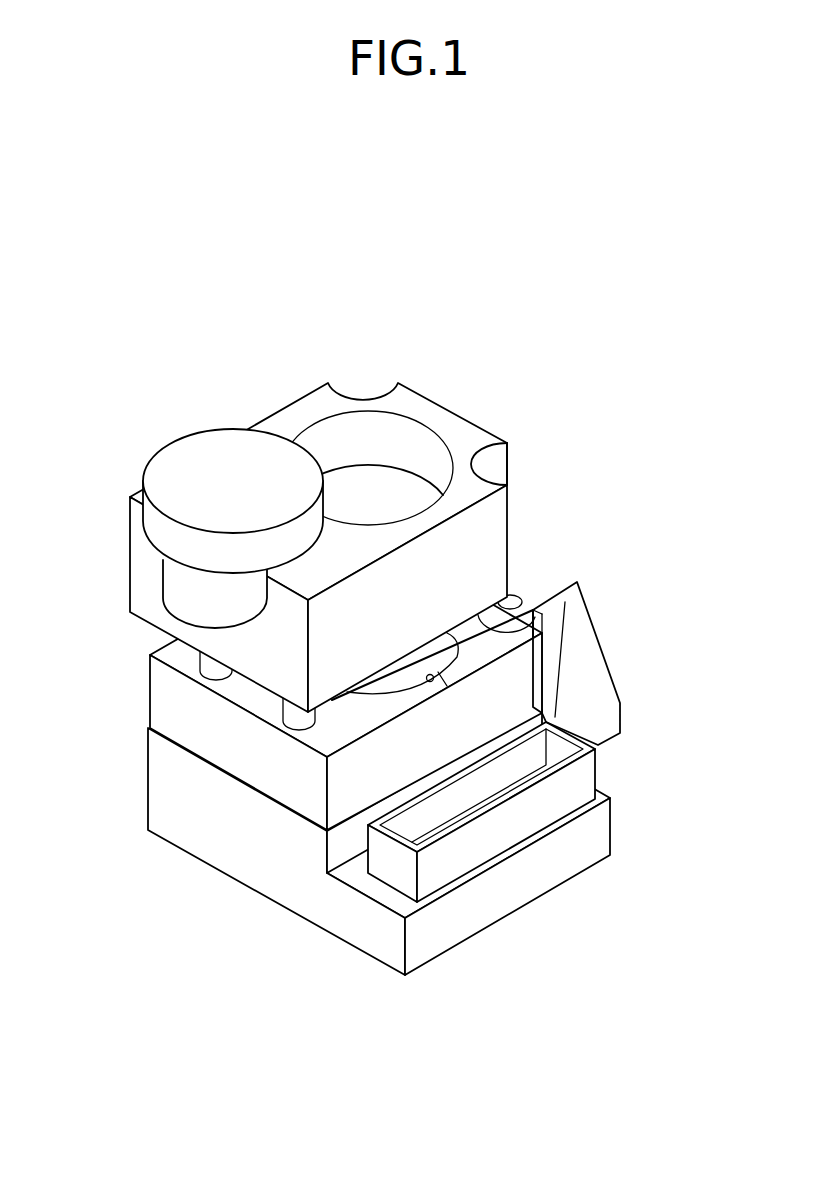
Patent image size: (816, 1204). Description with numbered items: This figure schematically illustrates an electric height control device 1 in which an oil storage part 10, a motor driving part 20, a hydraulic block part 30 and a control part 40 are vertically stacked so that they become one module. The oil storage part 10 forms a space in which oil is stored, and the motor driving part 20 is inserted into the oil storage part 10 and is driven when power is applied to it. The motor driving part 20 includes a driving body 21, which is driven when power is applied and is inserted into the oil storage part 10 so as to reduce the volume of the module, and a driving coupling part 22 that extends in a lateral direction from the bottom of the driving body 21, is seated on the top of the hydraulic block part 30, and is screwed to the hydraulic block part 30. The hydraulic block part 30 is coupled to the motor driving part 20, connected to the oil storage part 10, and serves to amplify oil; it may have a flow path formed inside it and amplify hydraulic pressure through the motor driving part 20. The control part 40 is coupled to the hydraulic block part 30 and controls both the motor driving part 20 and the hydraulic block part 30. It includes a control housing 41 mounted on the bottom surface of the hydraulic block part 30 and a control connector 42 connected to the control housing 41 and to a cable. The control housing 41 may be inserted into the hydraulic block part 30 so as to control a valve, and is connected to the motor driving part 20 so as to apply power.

The electric height control device 1 is at (691, 225).
The oil storage part 10 is at (462, 413).
The motor driving part 20 is at (535, 639).
The driving body 21 is at (415, 660).
The driving coupling part 22 is at (420, 648).
The hydraulic block part 30 is at (148, 679).
The control part 40 is at (379, 878).
The control housing 41 is at (235, 855).
The control connector 42 is at (395, 875).